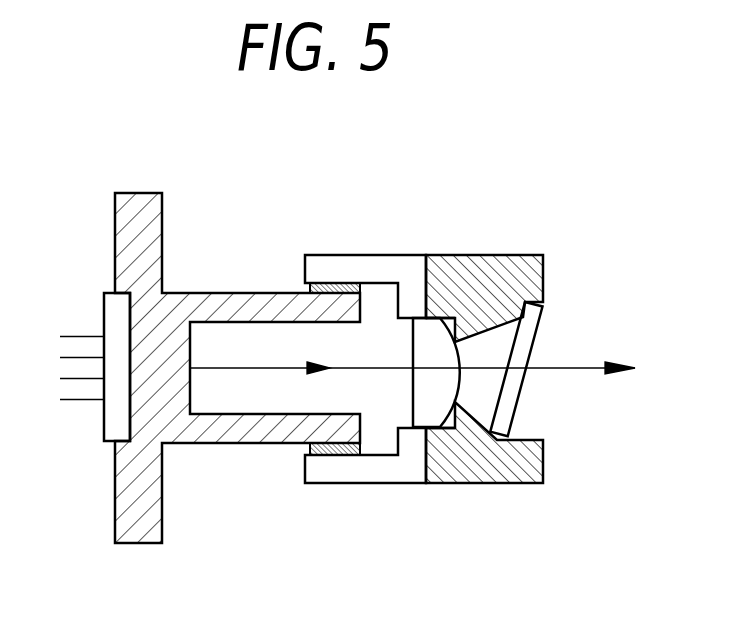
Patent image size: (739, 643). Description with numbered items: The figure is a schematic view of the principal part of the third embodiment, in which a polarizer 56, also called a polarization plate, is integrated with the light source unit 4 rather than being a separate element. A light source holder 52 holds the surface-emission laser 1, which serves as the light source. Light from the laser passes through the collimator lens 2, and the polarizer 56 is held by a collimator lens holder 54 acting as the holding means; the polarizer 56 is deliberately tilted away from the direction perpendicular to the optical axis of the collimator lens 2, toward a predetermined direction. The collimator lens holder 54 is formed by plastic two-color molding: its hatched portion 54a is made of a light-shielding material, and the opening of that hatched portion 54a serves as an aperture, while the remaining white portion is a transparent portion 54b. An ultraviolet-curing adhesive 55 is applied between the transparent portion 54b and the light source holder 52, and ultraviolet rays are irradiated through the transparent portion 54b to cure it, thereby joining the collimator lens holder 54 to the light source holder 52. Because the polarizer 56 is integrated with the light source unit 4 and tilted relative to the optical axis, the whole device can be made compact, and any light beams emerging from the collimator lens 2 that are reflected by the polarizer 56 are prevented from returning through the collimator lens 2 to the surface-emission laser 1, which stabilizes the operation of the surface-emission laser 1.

The surface-emission laser 1 is at (110, 418).
The collimator lens 2 is at (422, 393).
The light source unit 4 is at (522, 178).
The light source holder 52 is at (153, 202).
The collimator lens holder 54 is at (443, 370).
The hatched portion 54a is at (503, 257).
The transparent portion 54b is at (365, 257).
The ultraviolet-curing adhesive 55 is at (308, 285).
The polarizer 56 is at (533, 323).